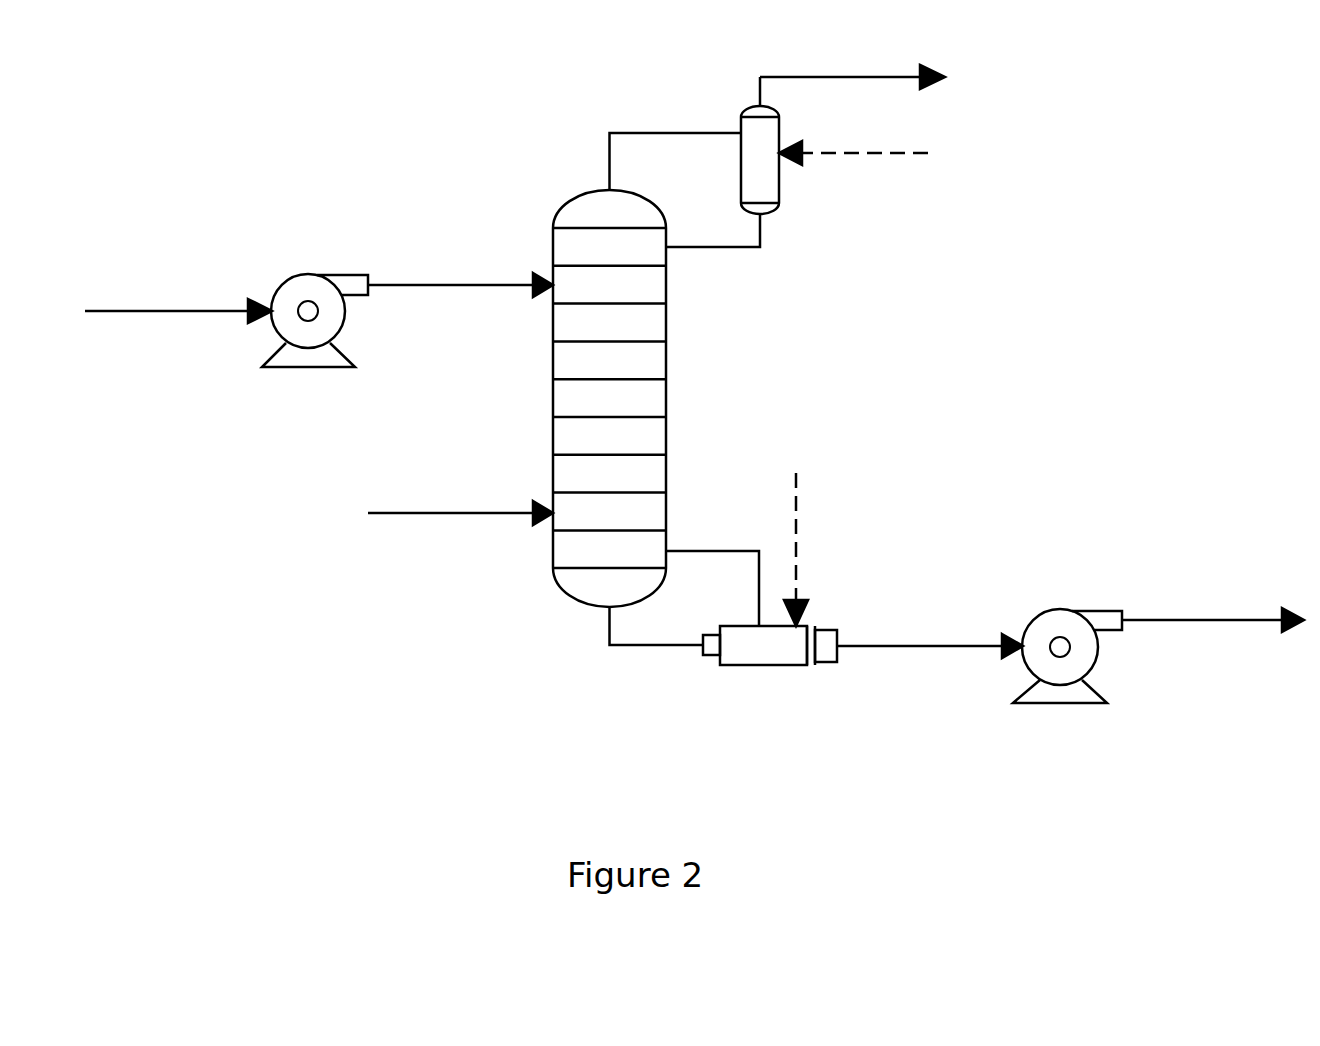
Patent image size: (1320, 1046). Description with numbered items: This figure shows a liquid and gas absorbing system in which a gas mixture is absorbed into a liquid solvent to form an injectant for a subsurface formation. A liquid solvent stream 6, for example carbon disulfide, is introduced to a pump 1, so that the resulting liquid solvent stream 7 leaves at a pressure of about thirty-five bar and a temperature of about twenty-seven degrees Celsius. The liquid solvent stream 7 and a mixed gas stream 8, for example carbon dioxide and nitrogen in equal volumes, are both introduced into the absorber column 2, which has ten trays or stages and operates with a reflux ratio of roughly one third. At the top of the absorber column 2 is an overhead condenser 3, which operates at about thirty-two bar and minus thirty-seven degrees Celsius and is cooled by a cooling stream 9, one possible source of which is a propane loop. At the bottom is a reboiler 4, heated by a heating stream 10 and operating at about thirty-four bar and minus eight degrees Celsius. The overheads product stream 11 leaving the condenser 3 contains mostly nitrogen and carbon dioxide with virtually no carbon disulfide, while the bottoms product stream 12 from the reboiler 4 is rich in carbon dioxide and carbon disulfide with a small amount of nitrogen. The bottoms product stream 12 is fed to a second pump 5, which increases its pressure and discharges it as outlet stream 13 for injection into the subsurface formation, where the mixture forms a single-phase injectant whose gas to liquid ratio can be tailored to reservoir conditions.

The pump 1 is at (315, 295).
The absorber column 2 is at (644, 389).
The overhead condenser 3 is at (722, 162).
The bottom reboiler 4 is at (770, 673).
The pump 5 is at (1067, 630).
The liquid solvent stream 6 is at (178, 293).
The liquid solvent stream 7 is at (460, 267).
The mixed gas stream 8 is at (460, 495).
The cooling stream 9 is at (853, 173).
The heating stream 10 is at (821, 549).
The overheads product stream 11 is at (852, 56).
The bottoms product stream 12 is at (930, 628).
The bottoms product outlet 13 is at (1213, 599).